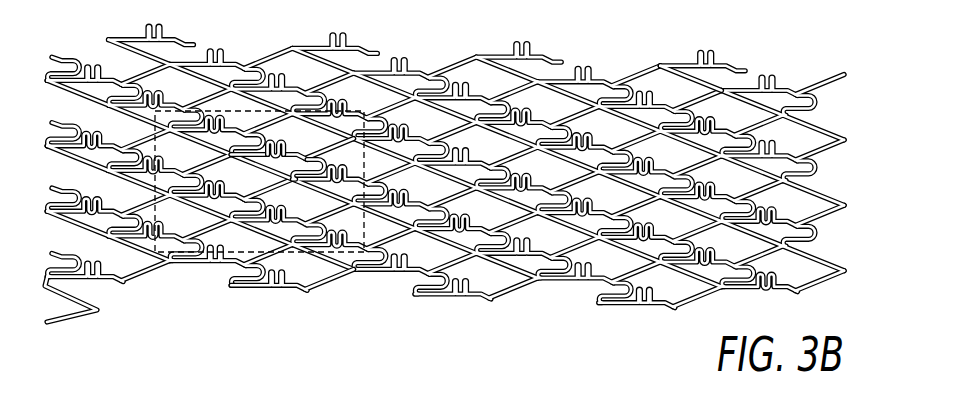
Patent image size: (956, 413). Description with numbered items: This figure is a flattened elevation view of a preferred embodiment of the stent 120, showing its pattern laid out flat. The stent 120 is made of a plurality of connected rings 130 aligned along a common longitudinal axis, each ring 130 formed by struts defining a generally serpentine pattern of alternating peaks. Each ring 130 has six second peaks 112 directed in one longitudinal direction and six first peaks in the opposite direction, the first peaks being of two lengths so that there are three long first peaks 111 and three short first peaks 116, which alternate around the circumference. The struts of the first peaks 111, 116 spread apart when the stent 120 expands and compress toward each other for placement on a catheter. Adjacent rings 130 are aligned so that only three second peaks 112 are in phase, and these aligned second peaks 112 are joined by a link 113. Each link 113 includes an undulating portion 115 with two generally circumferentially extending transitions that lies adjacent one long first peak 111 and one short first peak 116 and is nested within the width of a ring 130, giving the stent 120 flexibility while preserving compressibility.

The long first peak 111 is at (284, 183).
The second peak 112 is at (232, 153).
The link 113 is at (249, 154).
The undulating portion 115 is at (249, 153).
The short first peak 116 is at (287, 145).
The stent 120 is at (734, 60).
The ring 130 is at (286, 308).